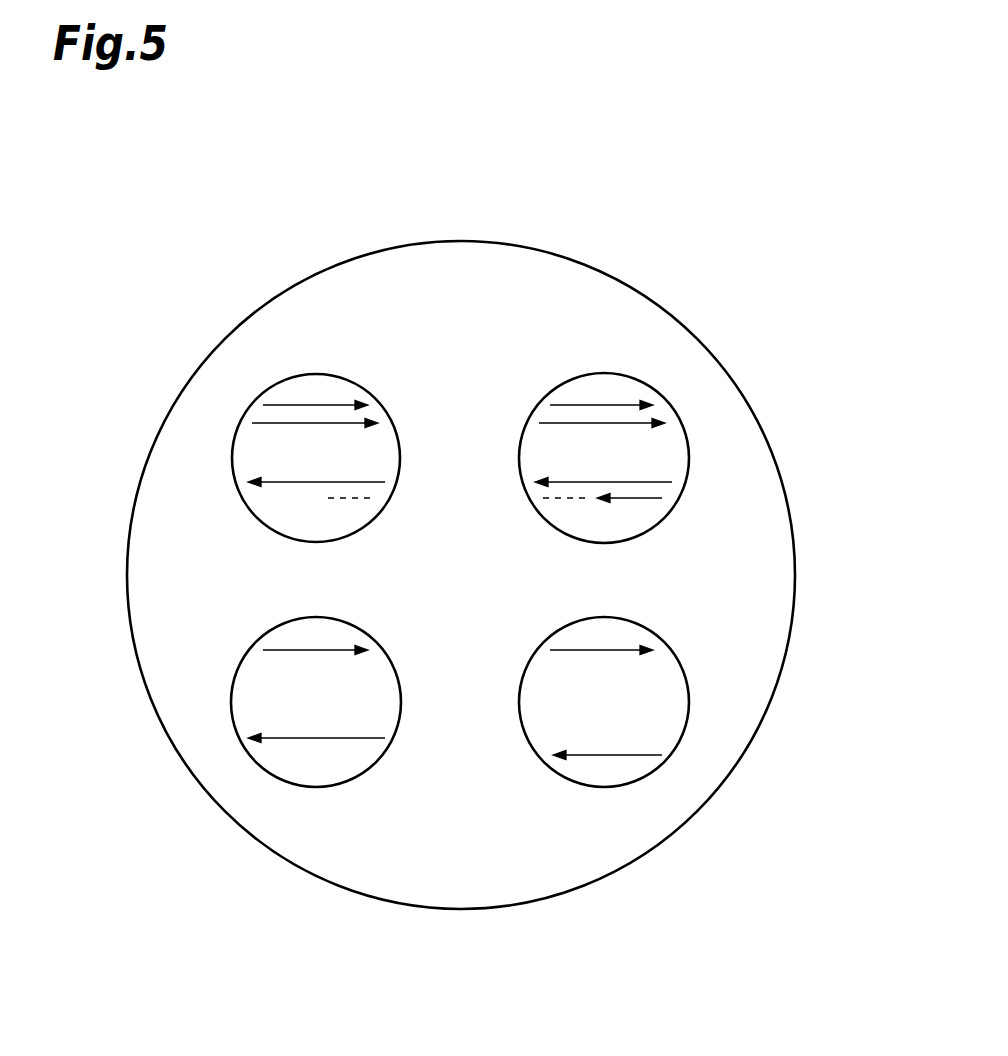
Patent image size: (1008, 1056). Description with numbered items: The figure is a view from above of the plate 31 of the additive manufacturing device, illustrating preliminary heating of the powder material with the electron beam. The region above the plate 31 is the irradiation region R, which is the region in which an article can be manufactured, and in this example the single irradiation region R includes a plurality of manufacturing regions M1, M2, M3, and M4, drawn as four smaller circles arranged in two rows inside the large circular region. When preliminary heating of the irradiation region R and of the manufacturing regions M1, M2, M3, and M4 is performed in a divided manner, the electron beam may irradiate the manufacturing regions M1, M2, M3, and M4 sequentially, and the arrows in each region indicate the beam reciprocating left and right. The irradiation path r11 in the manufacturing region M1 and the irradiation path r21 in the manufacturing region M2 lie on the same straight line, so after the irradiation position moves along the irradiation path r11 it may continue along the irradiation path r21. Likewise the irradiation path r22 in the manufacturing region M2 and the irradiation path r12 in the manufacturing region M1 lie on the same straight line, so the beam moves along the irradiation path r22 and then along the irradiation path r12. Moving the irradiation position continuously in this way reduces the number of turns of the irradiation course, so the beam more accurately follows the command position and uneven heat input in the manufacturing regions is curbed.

The plate 31 is at (735, 768).
The irradiation region R is at (732, 680).
The manufacturing region M1 is at (229, 442).
The manufacturing region M2 is at (685, 442).
The manufacturing region M3 is at (230, 716).
The manufacturing region M4 is at (660, 770).
The irradiation path r11 is at (318, 403).
The irradiation path r12 is at (297, 480).
The irradiation path r21 is at (582, 403).
The irradiation path r22 is at (580, 480).